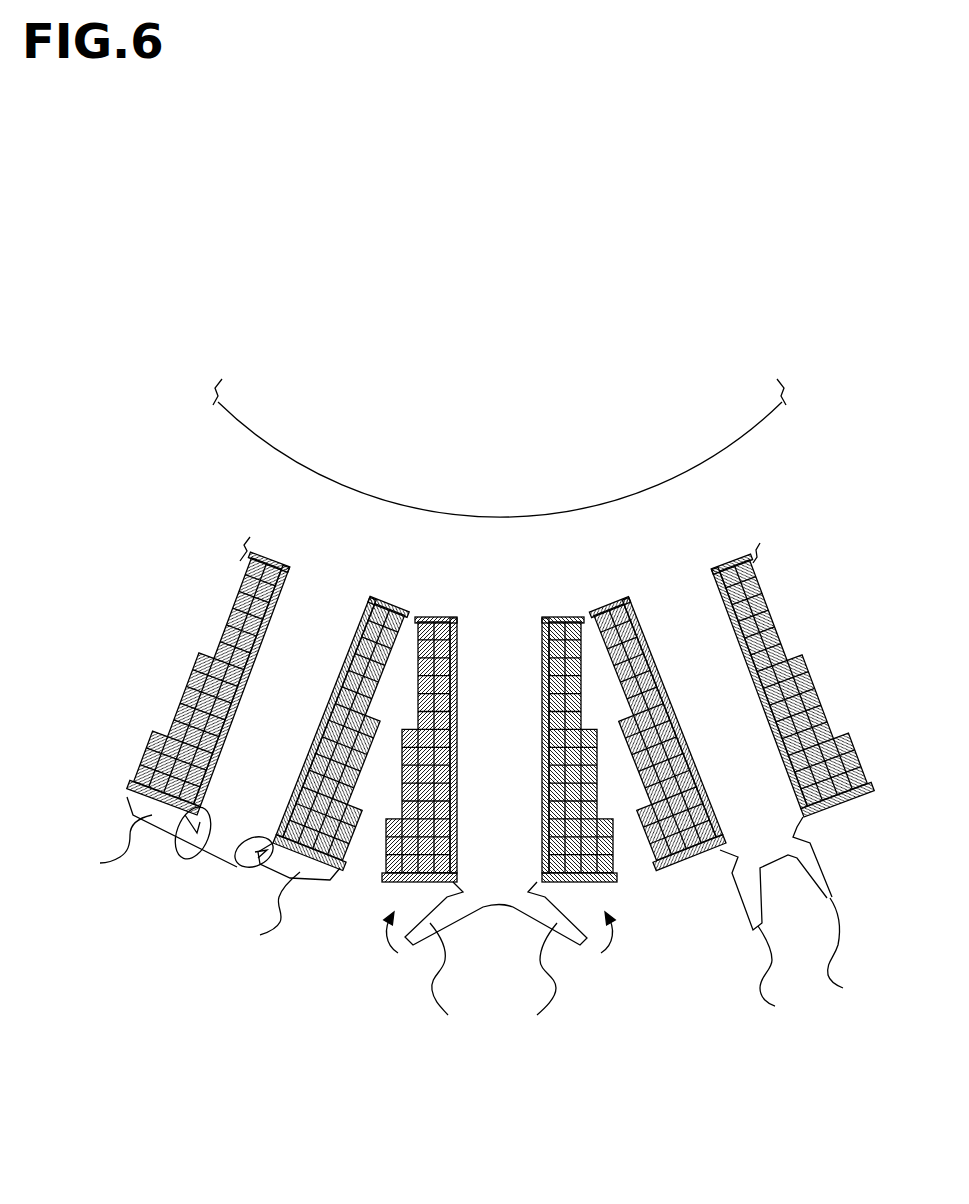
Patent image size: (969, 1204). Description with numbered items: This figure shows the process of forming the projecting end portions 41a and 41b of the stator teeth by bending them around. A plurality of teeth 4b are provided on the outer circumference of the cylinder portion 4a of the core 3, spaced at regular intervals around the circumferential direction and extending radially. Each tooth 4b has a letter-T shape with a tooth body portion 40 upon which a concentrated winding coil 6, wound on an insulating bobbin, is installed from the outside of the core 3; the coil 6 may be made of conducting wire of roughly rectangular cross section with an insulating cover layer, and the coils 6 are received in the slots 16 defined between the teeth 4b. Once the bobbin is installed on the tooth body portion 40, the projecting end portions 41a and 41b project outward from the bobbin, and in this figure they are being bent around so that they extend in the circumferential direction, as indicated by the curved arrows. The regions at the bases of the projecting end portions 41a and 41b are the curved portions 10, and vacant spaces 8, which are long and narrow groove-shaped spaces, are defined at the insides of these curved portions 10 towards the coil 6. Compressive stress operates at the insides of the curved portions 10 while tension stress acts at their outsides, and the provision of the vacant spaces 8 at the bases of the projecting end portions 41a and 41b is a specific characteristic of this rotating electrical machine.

The core 3 is at (614, 500).
The cylinder portion 4a is at (340, 505).
The teeth 4b is at (697, 715).
The concentrated winding coil 6 is at (227, 640).
The tooth body portion 40 is at (270, 717).
The projecting end portion 41a is at (441, 928).
The projecting end portion 41b is at (561, 957).
The curved portions 10 is at (252, 865).
The vacant spaces 8 is at (247, 868).
The slots 16 is at (625, 803).